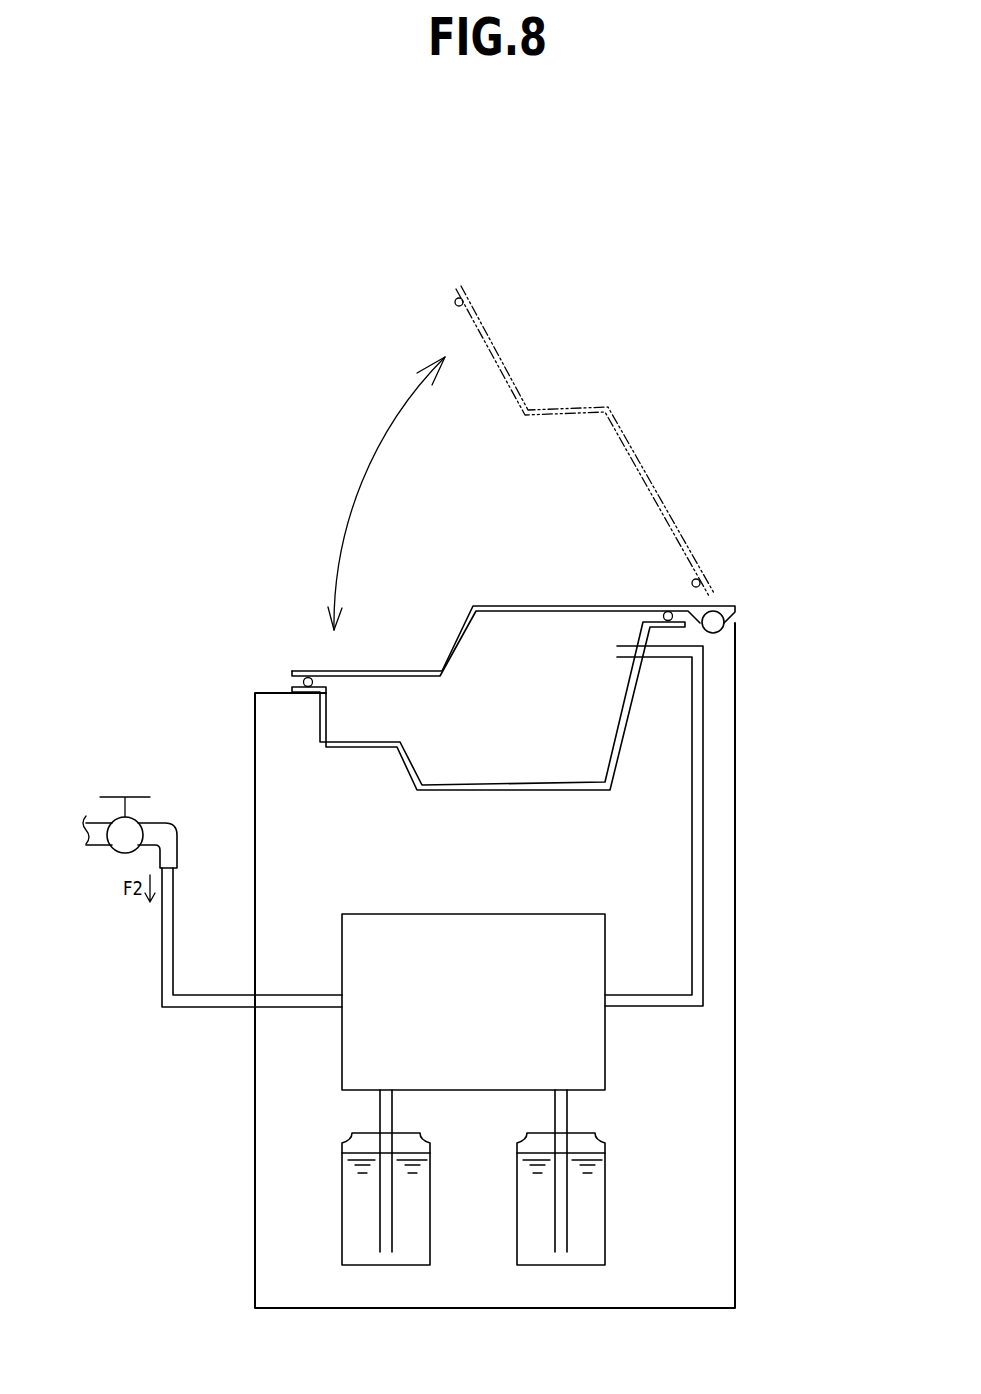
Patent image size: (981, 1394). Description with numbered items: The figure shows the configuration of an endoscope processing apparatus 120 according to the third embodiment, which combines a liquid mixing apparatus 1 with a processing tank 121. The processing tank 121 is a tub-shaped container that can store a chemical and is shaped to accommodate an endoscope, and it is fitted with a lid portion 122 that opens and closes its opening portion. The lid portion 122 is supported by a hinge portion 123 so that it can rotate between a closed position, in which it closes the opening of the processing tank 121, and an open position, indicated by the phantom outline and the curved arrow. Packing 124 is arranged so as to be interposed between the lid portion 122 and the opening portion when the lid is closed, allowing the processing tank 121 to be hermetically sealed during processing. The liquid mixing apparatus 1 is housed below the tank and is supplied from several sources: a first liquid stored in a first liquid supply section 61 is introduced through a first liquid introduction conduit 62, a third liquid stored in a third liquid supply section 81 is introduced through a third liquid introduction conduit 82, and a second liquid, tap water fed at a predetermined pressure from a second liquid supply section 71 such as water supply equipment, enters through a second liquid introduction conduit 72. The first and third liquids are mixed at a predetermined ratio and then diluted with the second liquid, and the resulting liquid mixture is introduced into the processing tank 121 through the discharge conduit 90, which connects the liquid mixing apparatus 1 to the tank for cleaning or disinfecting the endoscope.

The endoscope processing apparatus 120 is at (210, 533).
The processing tank 121 is at (332, 750).
The lid portion 122 is at (393, 669).
The hinge portion 123 is at (722, 632).
The packing 124 is at (301, 682).
The discharge conduit 90 is at (680, 1010).
The liquid mixing apparatus 1 is at (363, 913).
The second liquid supply section 71 is at (113, 853).
The second liquid introduction conduit 72 is at (162, 970).
The first liquid supply section 61 is at (342, 1223).
The first liquid introduction conduit 62 is at (393, 1117).
The third liquid supply section 81 is at (605, 1223).
The third liquid introduction conduit 82 is at (568, 1112).